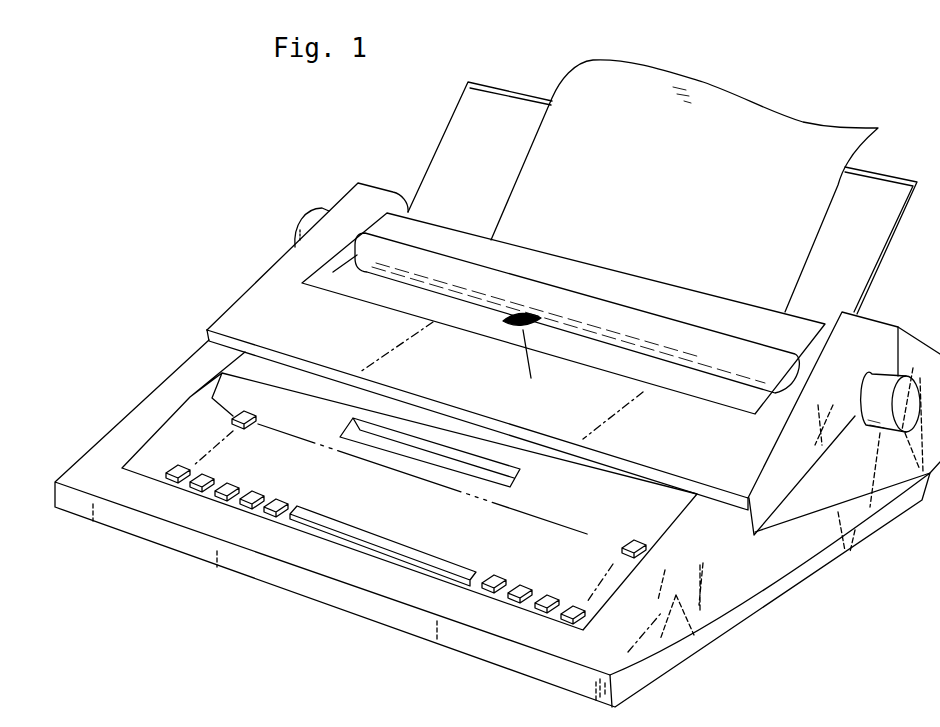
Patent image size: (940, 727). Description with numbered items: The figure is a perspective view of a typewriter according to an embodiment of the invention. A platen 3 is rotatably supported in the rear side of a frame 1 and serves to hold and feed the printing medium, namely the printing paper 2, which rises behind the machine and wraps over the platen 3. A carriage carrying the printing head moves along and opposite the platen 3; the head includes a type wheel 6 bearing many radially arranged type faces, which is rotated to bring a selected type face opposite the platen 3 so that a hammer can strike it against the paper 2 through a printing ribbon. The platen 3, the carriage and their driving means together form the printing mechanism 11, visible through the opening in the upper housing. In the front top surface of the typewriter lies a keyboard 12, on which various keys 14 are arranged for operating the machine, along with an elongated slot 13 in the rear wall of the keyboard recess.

The frame 1 is at (246, 293).
The printing paper 2 is at (827, 138).
The platen 3 is at (633, 318).
The type wheel 6 is at (541, 317).
The printing mechanism 11 is at (597, 278).
The keyboard 12 is at (140, 463).
The slot 13 is at (470, 470).
The keys 14 is at (353, 533).